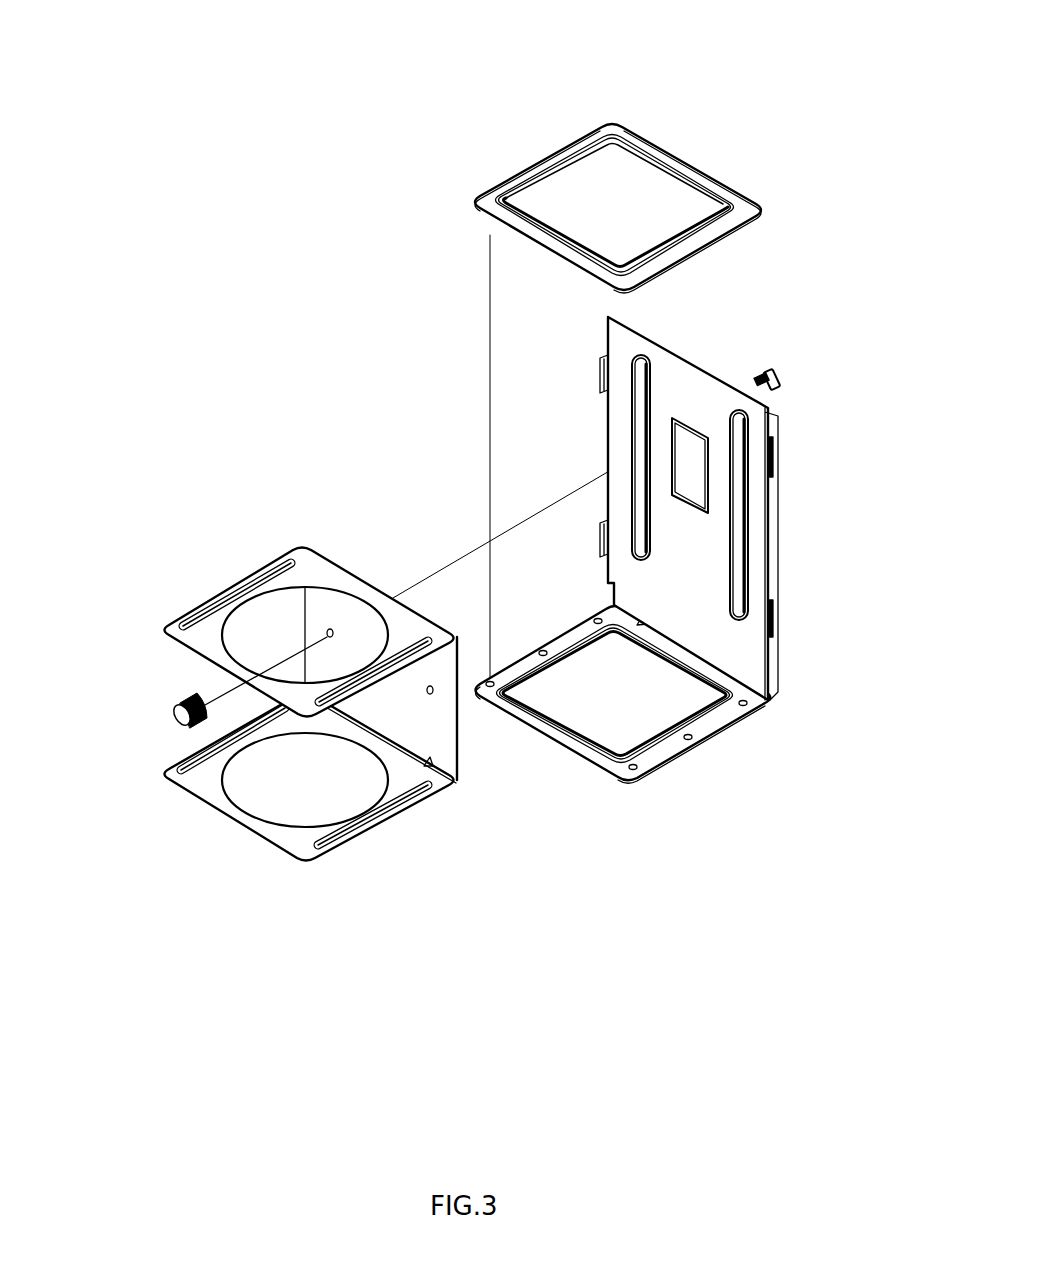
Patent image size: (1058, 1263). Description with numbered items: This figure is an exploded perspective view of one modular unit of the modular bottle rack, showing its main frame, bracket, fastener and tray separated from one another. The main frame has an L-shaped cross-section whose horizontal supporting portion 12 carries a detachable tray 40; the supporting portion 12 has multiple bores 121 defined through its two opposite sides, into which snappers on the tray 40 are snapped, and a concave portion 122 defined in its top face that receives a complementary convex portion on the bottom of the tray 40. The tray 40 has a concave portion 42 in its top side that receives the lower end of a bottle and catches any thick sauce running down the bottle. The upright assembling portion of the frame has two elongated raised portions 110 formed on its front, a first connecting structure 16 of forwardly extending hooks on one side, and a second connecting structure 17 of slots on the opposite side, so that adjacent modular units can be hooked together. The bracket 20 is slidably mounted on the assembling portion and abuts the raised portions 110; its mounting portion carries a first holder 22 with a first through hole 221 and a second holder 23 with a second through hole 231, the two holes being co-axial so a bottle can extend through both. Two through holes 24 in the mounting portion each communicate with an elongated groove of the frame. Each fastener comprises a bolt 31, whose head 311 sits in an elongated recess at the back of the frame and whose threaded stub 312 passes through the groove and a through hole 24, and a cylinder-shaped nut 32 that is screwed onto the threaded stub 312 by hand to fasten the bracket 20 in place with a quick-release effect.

The tray 40 is at (555, 146).
The concave portion 42 is at (577, 182).
The supporting portion 12 is at (647, 764).
The bores 121 is at (690, 738).
The concave portion 122 is at (592, 723).
The elongated raised portions 110 is at (700, 508).
The first connecting structure 16 is at (602, 378).
The second connecting structure 17 is at (775, 458).
The bolt 31 is at (771, 366).
The head 311 is at (796, 392).
The threaded stub 312 is at (756, 382).
The bracket 20 is at (321, 743).
The first holder 22 is at (258, 611).
The first through hole 221 is at (268, 610).
The second holder 23 is at (280, 826).
The second through hole 231 is at (283, 800).
The through holes 24 is at (433, 692).
The nut 32 is at (176, 716).